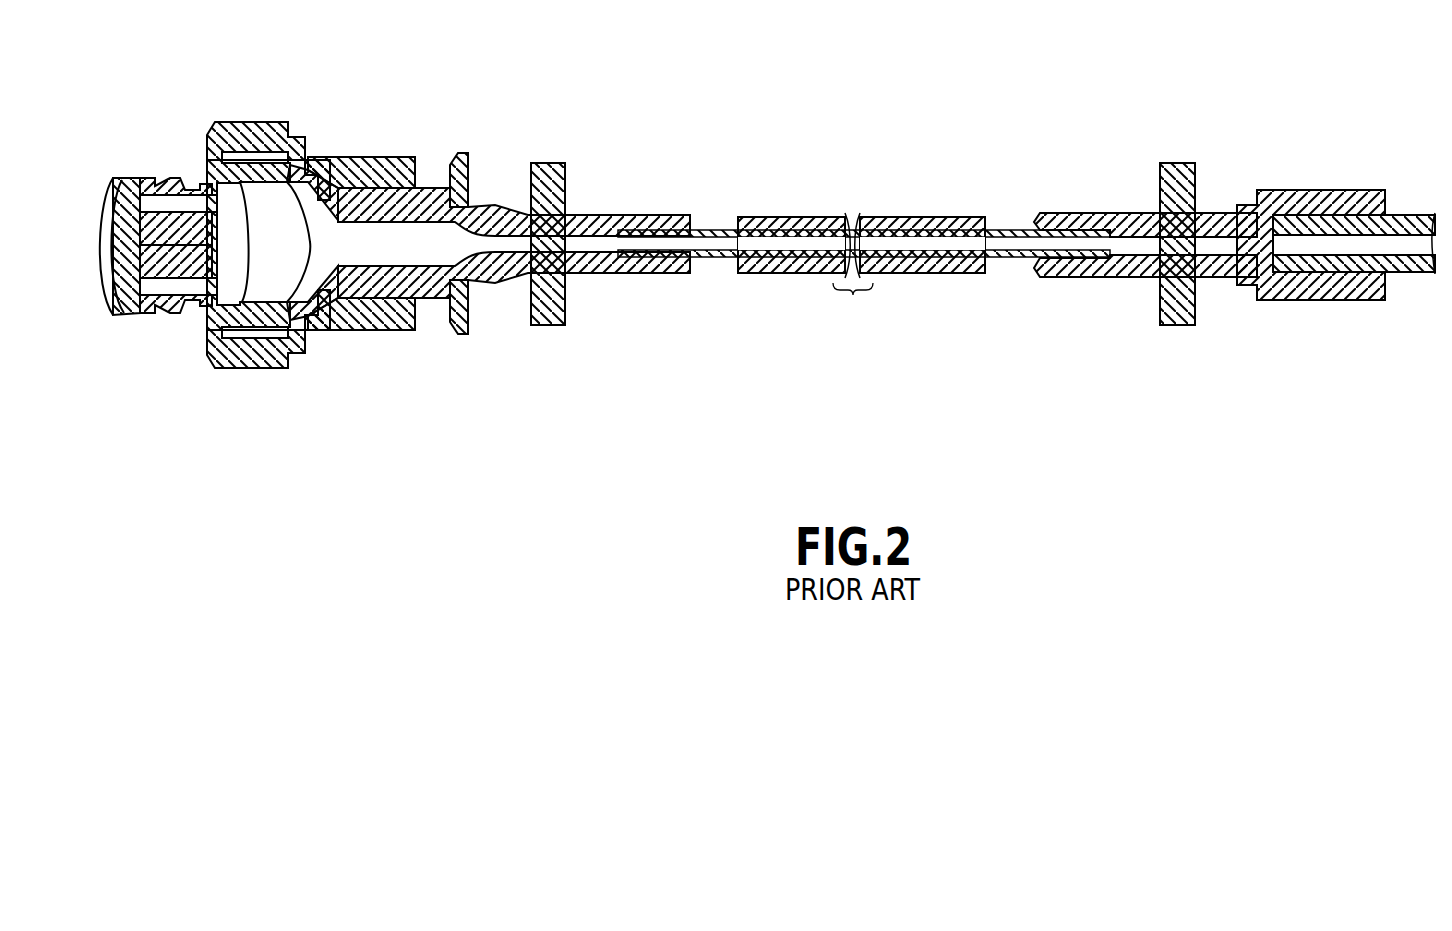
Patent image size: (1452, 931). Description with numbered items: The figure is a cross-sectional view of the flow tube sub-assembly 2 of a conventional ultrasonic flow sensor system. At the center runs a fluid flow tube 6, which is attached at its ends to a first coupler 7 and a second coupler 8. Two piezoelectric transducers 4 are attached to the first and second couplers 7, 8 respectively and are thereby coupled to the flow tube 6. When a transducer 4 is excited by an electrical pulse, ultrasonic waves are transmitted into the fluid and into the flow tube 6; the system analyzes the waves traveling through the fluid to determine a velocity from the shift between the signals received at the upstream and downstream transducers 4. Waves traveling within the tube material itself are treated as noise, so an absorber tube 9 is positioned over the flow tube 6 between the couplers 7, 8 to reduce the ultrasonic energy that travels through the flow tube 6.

The flow tube sub-assembly 2 is at (857, 182).
The piezoelectric transducers 4 is at (566, 157).
The fluid flow tube 6 is at (721, 228).
The first coupler 7 is at (505, 273).
The second coupler 8 is at (1135, 277).
The absorber tube 9 is at (951, 270).